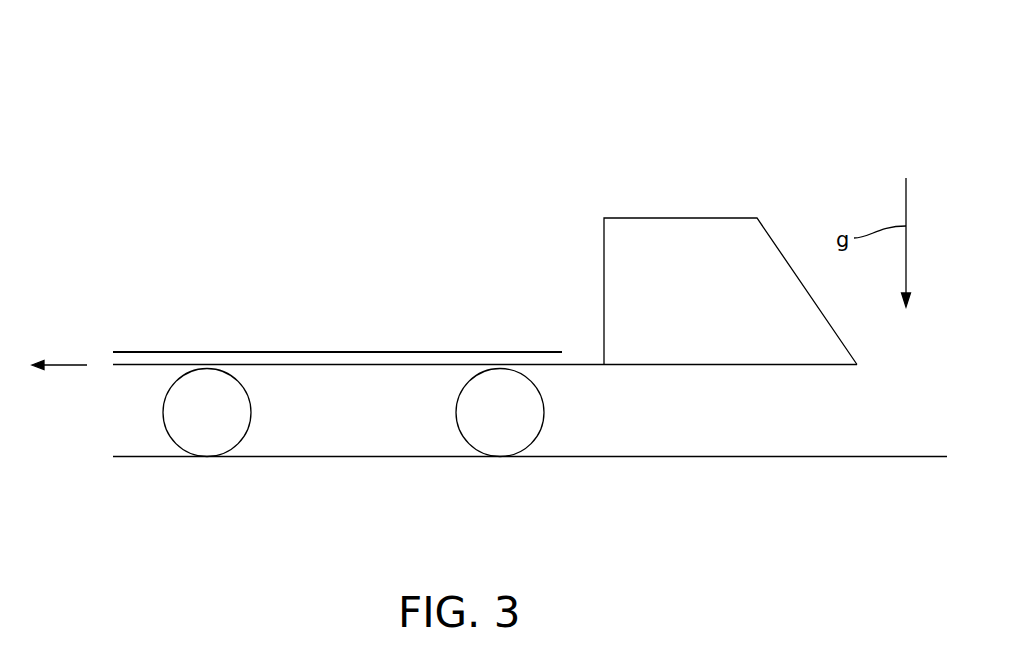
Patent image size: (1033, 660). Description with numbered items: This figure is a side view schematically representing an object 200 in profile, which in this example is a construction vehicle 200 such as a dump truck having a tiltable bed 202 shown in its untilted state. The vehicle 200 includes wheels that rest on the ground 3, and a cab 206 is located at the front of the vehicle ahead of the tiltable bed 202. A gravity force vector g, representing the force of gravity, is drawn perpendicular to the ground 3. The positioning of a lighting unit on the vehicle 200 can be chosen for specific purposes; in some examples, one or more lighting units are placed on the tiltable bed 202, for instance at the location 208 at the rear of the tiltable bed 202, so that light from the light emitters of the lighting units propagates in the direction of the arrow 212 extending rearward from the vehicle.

The object 200 is at (668, 78).
The tiltable bed 202 is at (332, 351).
The cab 206 is at (682, 218).
The location 208 is at (113, 352).
The arrow 212 is at (68, 364).
The ground 3 is at (700, 456).